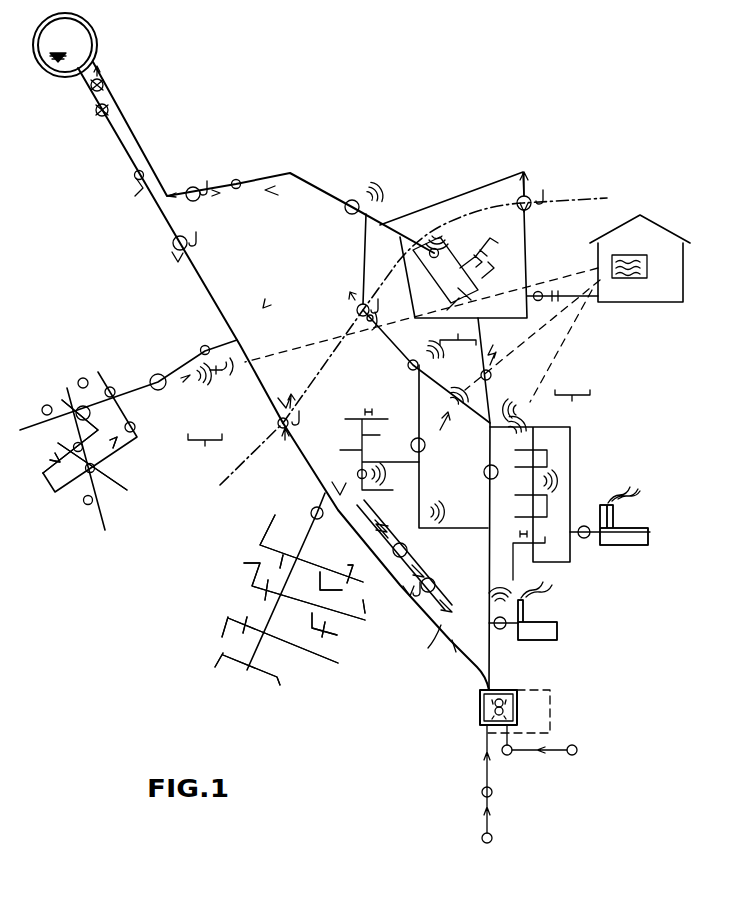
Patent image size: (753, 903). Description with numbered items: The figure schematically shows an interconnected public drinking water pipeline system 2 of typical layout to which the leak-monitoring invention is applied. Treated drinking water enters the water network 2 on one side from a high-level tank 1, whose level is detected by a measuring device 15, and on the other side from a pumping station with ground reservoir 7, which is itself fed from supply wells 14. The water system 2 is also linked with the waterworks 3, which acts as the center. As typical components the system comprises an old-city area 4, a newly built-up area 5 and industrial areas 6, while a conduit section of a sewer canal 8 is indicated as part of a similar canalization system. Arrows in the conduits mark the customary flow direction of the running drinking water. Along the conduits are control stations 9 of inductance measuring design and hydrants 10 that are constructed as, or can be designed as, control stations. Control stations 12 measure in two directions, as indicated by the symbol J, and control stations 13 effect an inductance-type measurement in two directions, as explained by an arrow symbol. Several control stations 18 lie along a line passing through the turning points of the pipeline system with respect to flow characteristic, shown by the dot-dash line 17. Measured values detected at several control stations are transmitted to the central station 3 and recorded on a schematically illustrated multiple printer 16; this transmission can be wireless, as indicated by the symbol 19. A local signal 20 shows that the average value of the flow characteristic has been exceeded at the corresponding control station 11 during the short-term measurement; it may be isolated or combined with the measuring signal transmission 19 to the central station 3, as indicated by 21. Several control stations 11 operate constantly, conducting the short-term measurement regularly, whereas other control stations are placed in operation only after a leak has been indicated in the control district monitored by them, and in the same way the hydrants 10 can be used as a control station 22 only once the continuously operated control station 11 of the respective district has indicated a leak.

The high-level tank 1 is at (86, 36).
The public drinking water pipeline system 2 is at (266, 286).
The waterworks 3 is at (660, 305).
The old-city area 4 is at (37, 454).
The newly built-up area 5 is at (240, 614).
The industrial areas 6 is at (624, 584).
The pumping station with ground reservoir 7 is at (516, 702).
The sewer canal 8 is at (418, 552).
The control stations 9 is at (95, 110).
The hydrants 10 is at (484, 258).
The control station 11 is at (136, 188).
The control stations 12 is at (190, 187).
The control stations 13 is at (278, 423).
The supply wells 14 is at (494, 790).
The measuring device 15 is at (52, 57).
The multiple printer 16 is at (632, 255).
The dot-dash line 17 is at (576, 197).
The control stations 18 is at (348, 313).
The symbol for wireless measured value transmission 19 is at (545, 408).
The local signal 20 is at (437, 224).
The combination of local signal with measuring signal transmission 21 is at (389, 388).
The control station 22 is at (78, 383).